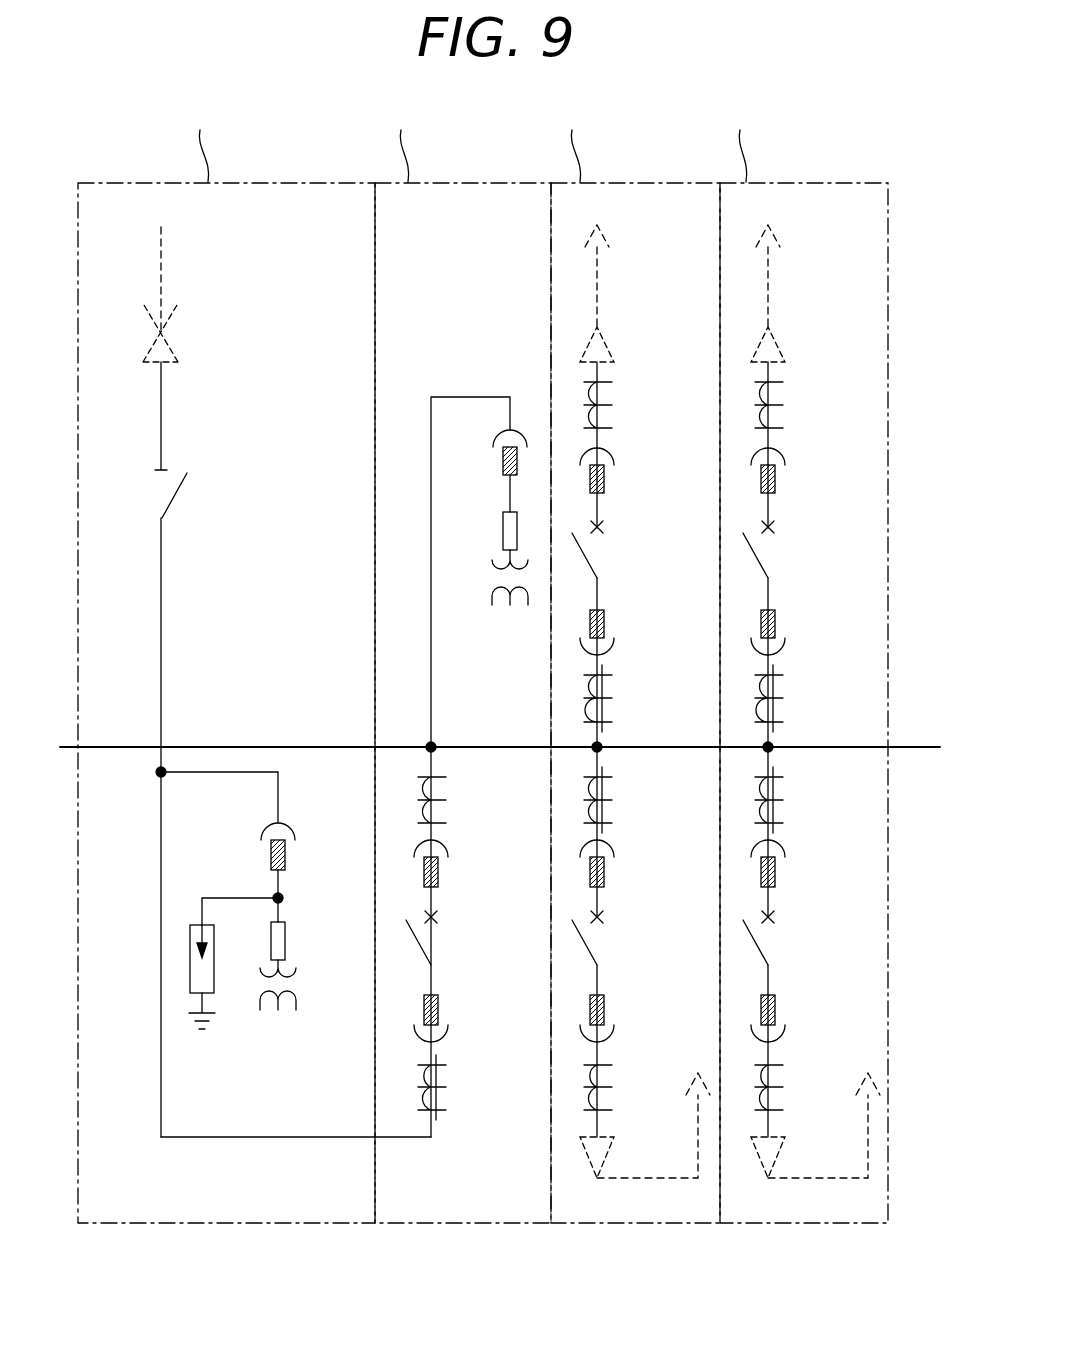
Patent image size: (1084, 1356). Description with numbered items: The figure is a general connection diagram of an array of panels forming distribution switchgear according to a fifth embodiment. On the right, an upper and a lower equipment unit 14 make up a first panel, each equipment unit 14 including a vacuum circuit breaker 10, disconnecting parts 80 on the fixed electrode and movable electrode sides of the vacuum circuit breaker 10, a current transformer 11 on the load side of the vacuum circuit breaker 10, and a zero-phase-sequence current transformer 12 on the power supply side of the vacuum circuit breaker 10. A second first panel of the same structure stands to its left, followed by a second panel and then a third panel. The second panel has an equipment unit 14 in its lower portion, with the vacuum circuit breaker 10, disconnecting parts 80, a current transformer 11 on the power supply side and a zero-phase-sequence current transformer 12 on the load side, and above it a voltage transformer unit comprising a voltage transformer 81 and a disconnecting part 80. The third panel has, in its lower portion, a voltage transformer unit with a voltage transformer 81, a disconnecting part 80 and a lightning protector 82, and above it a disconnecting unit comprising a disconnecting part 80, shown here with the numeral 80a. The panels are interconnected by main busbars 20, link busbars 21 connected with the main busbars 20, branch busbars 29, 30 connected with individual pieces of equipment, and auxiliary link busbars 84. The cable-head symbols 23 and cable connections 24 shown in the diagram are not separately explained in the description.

The vacuum circuit breaker 10 is at (433, 952).
The current transformer 11 is at (446, 826).
The zero-phase-sequence current transformer 12 is at (446, 1068).
The equipment unit 14 is at (668, 195).
The main busbar 20 is at (926, 745).
The link busbar 21 is at (158, 772).
The cable head (C.Hd) 23 is at (167, 335).
The cable / feeder line 24 is at (770, 262).
The branch busbar 29 is at (773, 370).
The branch busbar 30 is at (772, 1121).
The disconnecting part 80 is at (287, 856).
The disconnecting switch (DS) 80a is at (160, 495).
The voltage transformer 81 is at (292, 985).
The lightning protector 82 is at (201, 926).
The auxiliary link busbar 84 is at (330, 1140).